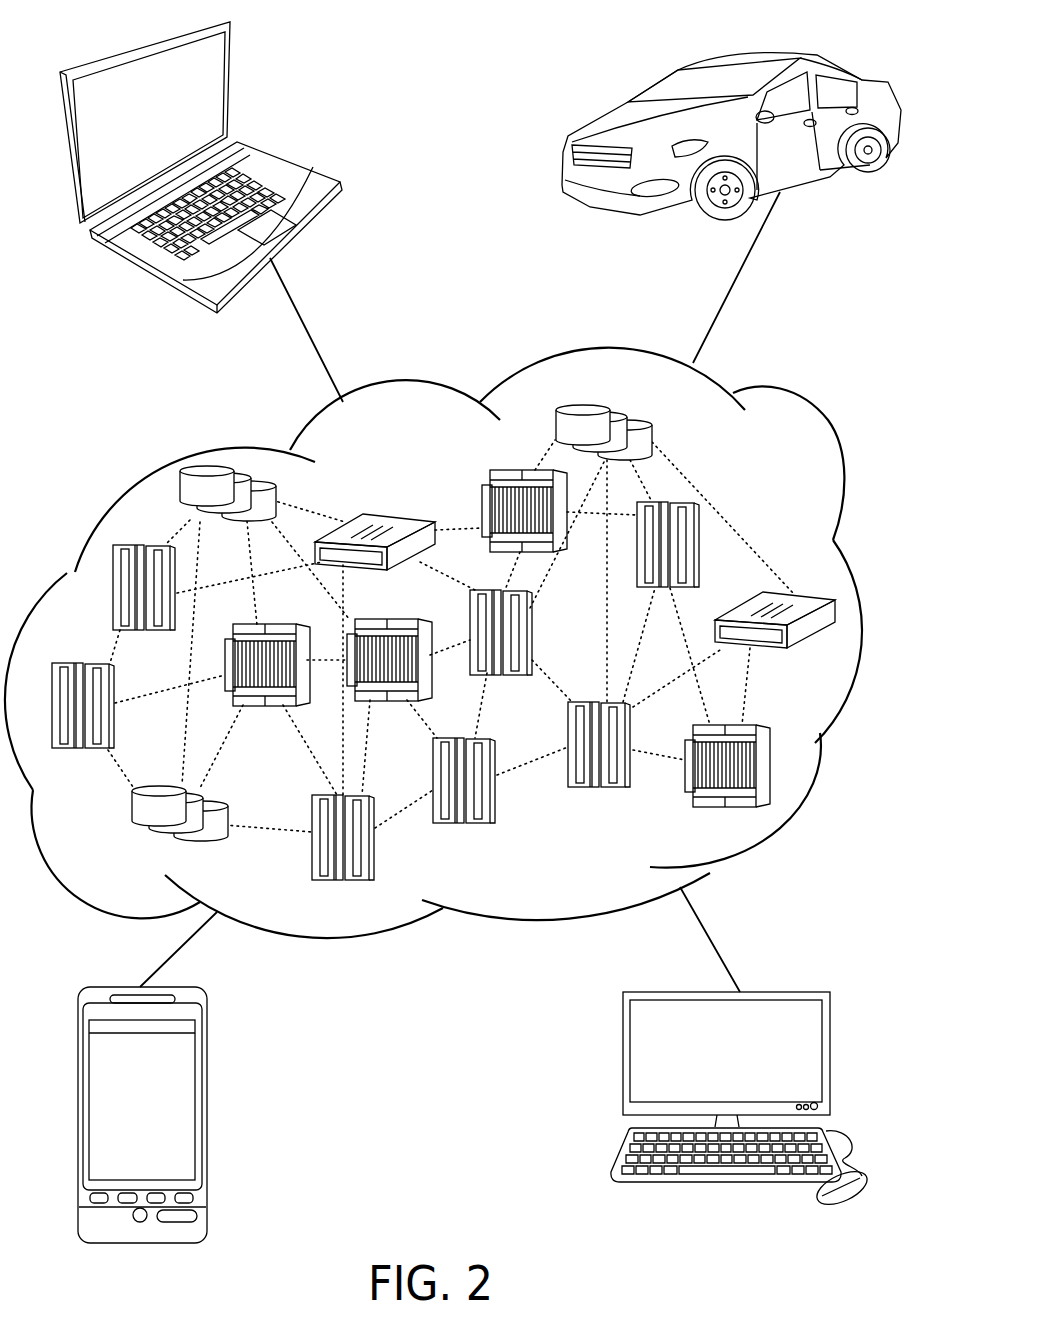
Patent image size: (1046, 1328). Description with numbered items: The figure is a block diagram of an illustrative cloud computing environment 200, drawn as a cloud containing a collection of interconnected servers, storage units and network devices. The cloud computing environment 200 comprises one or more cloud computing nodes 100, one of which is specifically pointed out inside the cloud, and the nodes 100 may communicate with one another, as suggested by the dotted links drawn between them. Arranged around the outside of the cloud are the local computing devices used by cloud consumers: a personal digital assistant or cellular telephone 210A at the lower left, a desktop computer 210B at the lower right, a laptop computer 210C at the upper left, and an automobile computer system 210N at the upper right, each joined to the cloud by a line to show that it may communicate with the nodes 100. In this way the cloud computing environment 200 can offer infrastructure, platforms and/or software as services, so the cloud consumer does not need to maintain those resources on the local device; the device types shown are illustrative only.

The cloud computing node 100 is at (804, 566).
The cloud computing environment 200 is at (810, 420).
The personal digital assistant or cellular telephone 210A is at (203, 1017).
The desktop computer 210B is at (830, 1012).
The laptop computer 210C is at (295, 163).
The automobile computer system 210N is at (843, 68).